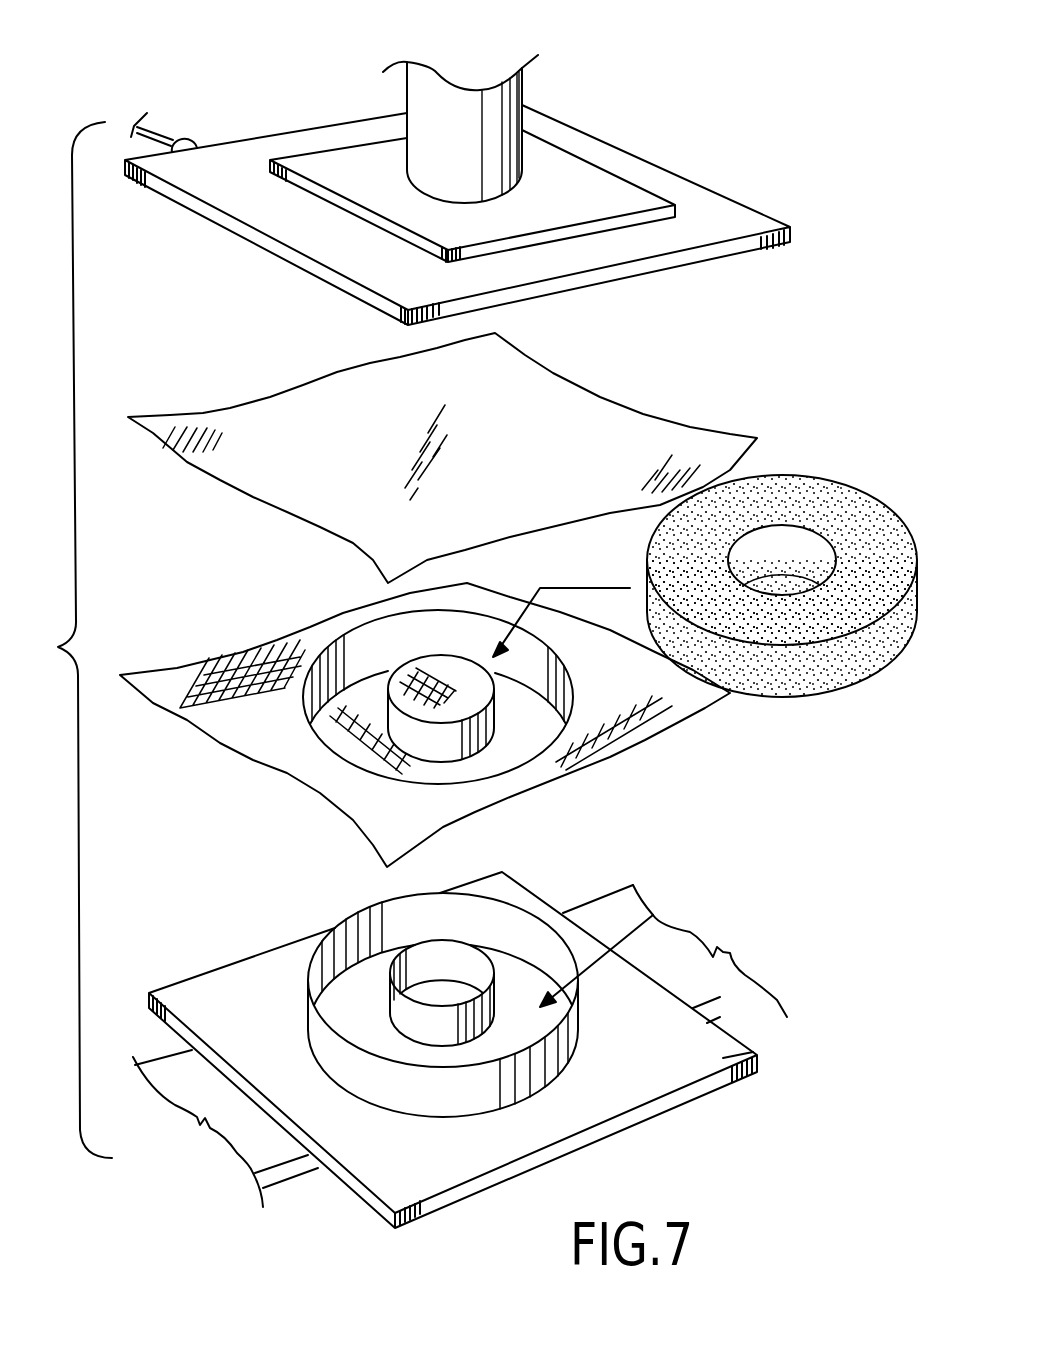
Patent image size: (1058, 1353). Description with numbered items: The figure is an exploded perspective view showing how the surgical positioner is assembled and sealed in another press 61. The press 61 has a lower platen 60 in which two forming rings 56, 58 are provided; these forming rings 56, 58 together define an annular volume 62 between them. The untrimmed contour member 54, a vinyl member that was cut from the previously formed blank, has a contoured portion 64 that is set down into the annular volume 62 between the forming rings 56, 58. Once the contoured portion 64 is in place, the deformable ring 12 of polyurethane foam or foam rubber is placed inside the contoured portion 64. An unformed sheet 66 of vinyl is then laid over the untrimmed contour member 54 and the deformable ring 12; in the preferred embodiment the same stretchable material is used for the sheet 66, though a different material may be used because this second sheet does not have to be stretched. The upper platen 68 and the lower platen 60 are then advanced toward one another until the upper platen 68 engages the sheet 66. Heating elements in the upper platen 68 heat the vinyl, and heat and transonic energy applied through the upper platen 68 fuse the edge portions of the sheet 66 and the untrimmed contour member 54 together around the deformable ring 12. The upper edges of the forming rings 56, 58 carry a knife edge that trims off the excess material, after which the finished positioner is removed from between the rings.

The deformable ring 12 is at (855, 513).
The untrimmed contour member 54 is at (657, 742).
The forming ring 56 is at (547, 943).
The forming ring 58 is at (470, 962).
The lower platen 60 is at (757, 1055).
The press 61 is at (656, 104).
The annular volume 62 is at (653, 915).
The contoured portion 64 is at (552, 722).
The unformed sheet 66 is at (633, 433).
The upper platen 68 is at (747, 222).